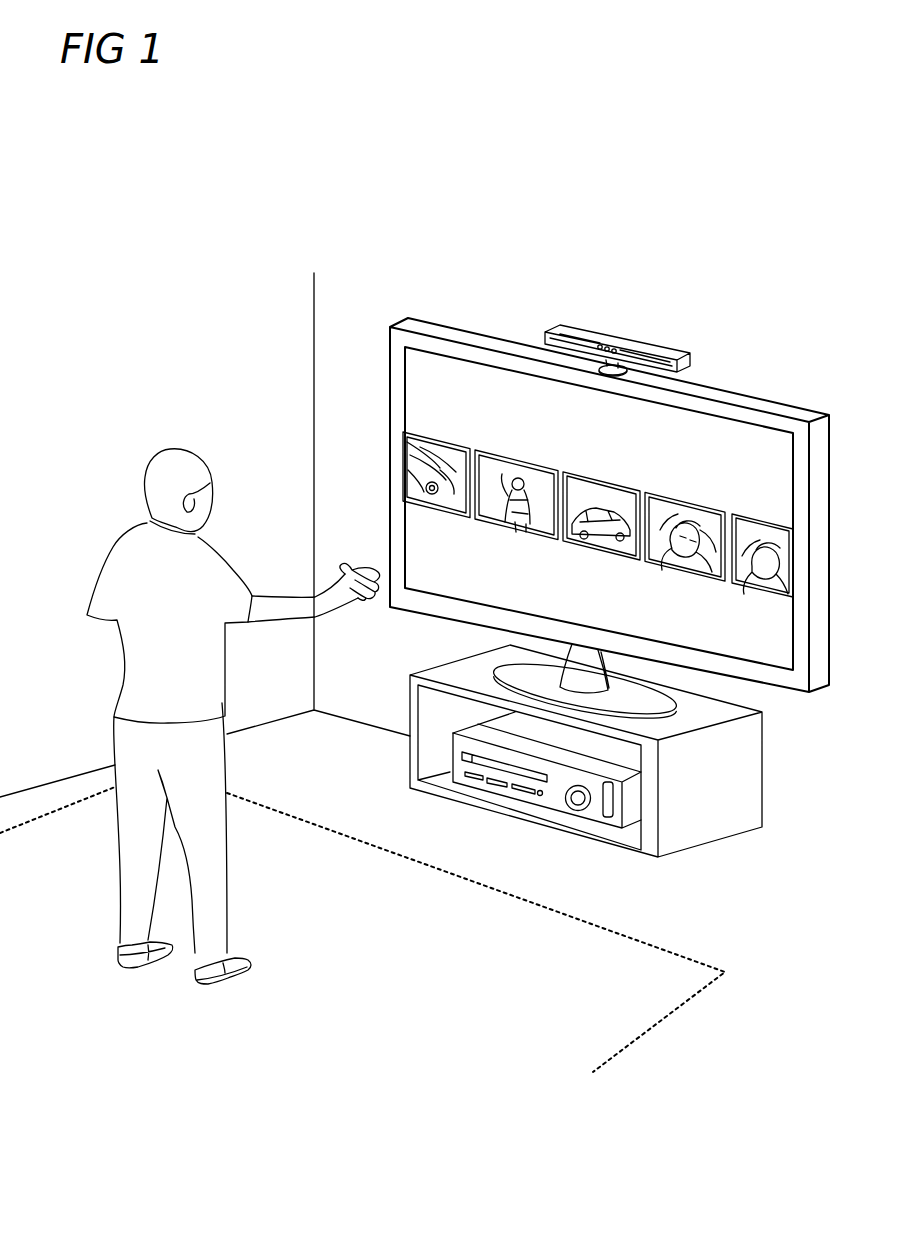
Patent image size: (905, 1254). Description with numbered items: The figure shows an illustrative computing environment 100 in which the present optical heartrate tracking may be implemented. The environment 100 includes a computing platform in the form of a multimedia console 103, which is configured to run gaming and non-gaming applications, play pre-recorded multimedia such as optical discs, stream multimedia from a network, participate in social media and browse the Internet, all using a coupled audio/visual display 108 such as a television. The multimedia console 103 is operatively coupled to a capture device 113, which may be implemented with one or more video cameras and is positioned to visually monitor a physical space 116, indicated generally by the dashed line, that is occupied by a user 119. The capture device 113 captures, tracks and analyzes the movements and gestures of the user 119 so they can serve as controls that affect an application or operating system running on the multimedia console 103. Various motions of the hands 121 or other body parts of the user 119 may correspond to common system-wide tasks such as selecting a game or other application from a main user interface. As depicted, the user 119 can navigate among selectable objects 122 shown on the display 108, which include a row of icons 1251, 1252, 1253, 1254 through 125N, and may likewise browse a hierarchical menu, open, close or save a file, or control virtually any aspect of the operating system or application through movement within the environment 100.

The computing environment 100 is at (421, 232).
The audio/visual display 108 is at (390, 365).
The capture device 113 is at (620, 342).
The selectable objects 122 is at (614, 441).
The icon 1251 is at (452, 514).
The icon 1252 is at (508, 528).
The icon 1253 is at (583, 548).
The icon 1254 is at (673, 572).
The icon 125N is at (737, 590).
The multimedia console 103 is at (556, 806).
The physical space 116 is at (712, 968).
The user 119 is at (128, 970).
The hands 121 is at (362, 567).